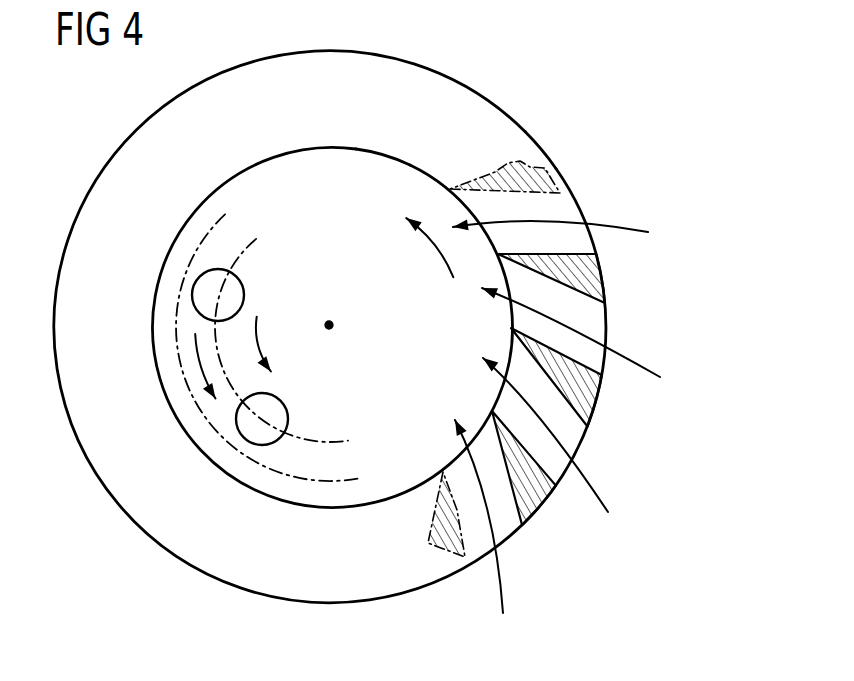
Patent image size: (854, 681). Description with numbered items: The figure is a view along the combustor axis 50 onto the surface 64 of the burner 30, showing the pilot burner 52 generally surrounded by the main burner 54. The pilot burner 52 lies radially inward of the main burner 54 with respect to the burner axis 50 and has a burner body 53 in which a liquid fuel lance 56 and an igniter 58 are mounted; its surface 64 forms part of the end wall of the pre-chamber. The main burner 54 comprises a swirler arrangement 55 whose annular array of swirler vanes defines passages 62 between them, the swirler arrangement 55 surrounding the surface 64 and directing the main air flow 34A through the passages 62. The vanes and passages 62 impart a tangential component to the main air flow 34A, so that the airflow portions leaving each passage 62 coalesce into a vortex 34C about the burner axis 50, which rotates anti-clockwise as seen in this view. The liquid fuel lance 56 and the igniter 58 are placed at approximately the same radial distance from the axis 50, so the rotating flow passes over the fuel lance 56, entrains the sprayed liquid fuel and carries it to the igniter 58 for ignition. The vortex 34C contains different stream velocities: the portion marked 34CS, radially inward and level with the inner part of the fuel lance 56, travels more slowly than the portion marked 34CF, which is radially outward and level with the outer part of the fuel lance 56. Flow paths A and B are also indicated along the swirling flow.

The burner 30 is at (570, 73).
The main air flow 34A is at (645, 364).
The vortex 34C is at (437, 252).
The main air flow portion 34CS is at (259, 341).
The main air flow portion 34CF is at (197, 362).
The burner axis 50 is at (333, 326).
The pilot burner 52 is at (158, 244).
The burner body 53 is at (380, 167).
The main burner 54 is at (131, 532).
The swirler arrangement 55 is at (584, 392).
The liquid fuel lance 56 is at (206, 291).
The igniter 58 is at (243, 437).
The passages 62 is at (566, 208).
The surface 64 is at (314, 292).
The flow path A is at (283, 221).
The flow path B is at (251, 196).